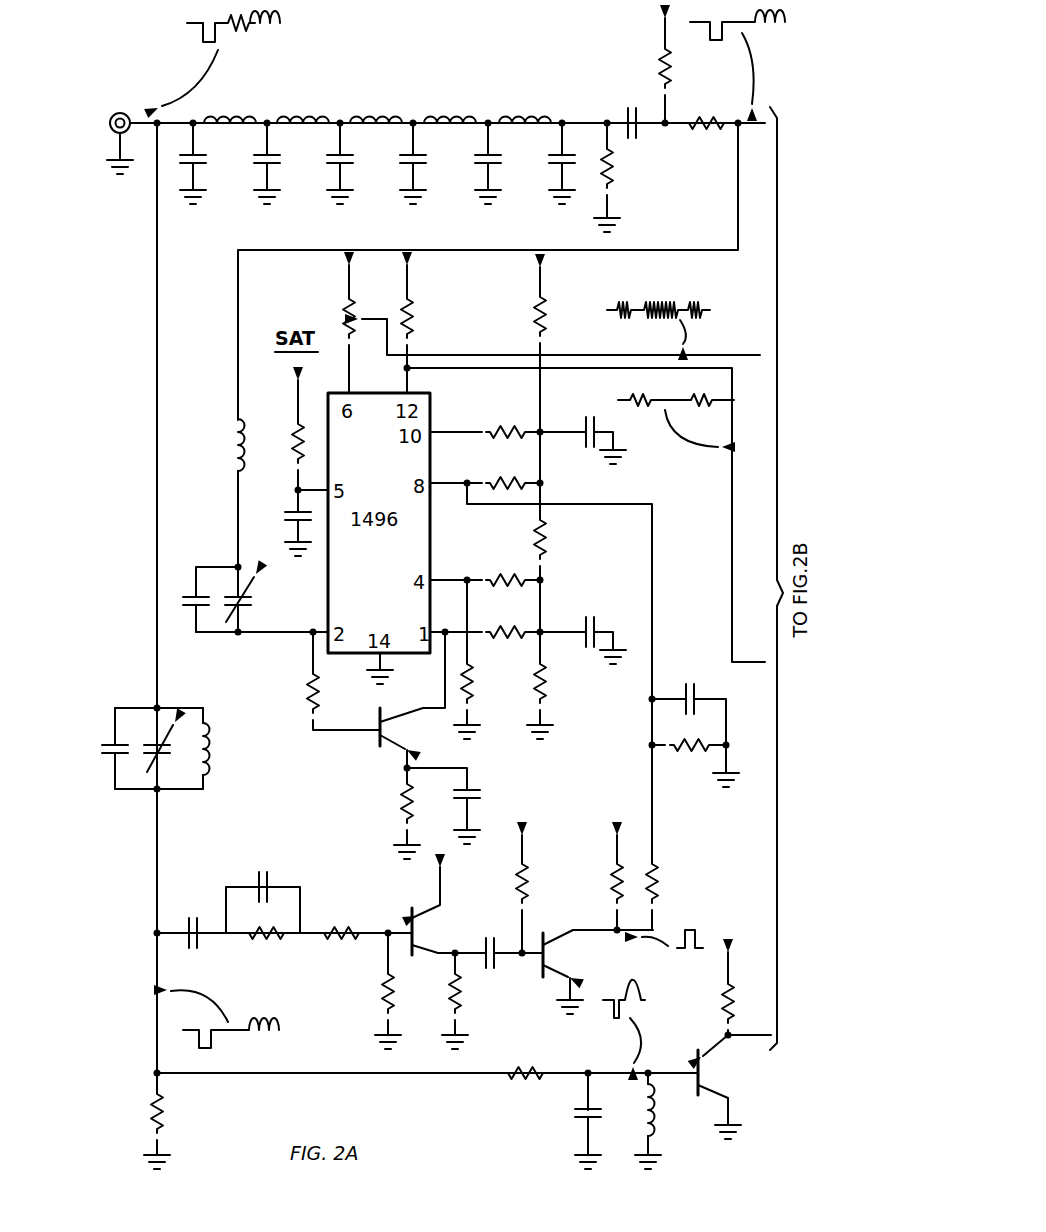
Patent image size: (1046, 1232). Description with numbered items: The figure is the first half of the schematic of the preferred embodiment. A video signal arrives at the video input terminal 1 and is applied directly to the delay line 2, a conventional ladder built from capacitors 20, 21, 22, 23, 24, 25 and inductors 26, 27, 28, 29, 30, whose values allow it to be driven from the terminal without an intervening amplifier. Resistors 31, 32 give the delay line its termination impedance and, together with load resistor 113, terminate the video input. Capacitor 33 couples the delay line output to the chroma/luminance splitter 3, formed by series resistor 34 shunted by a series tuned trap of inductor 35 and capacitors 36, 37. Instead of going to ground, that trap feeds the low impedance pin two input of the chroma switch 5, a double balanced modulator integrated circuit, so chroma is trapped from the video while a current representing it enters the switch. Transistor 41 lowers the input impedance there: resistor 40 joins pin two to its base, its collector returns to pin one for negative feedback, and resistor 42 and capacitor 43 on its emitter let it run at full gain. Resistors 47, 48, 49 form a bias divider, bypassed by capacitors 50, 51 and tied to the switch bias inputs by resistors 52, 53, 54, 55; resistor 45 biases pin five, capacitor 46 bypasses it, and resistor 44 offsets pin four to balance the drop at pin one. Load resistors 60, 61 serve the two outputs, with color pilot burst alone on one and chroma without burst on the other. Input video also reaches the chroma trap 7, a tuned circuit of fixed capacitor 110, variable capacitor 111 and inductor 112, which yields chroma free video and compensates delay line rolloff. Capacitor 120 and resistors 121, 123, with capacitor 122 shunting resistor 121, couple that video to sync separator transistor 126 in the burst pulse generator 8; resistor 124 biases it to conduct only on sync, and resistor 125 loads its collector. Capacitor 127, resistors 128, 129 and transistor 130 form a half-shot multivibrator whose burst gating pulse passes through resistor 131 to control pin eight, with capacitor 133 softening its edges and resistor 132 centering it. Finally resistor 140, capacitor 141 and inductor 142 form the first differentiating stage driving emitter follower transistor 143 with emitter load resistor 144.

The video input terminal 1 is at (131, 137).
The delay line 2 is at (424, 58).
The chroma/luminance splitter 3 is at (206, 407).
The chroma switch 5 is at (284, 677).
The chroma trap 7 is at (196, 692).
The burst pulse generator 8 is at (541, 1021).
The capacitor 20 is at (198, 163).
The capacitor 21 is at (272, 163).
The capacitor 22 is at (345, 163).
The capacitor 23 is at (418, 163).
The capacitor 24 is at (492, 163).
The capacitor 25 is at (560, 168).
The inductor 26 is at (224, 117).
The inductor 27 is at (297, 117).
The inductor 28 is at (370, 117).
The inductor 29 is at (444, 117).
The inductor 30 is at (517, 117).
The resistor 31 is at (610, 168).
The resistor 32 is at (660, 72).
The capacitor 33 is at (626, 115).
The series resistor 34 is at (712, 128).
The inductor 35 is at (236, 448).
The capacitor 36 is at (184, 598).
The capacitor 37 is at (247, 612).
The resistor 40 is at (312, 702).
The transistor 41 is at (380, 740).
The resistor 42 is at (404, 806).
The capacitor 43 is at (472, 796).
The resistor 44 is at (470, 700).
The resistor 45 is at (296, 440).
The capacitor 46 is at (294, 523).
The resistor 47 is at (545, 318).
The resistor 48 is at (543, 556).
The resistor 49 is at (543, 696).
The capacitor 50 is at (585, 436).
The capacitor 51 is at (595, 630).
The resistor 52 is at (512, 428).
The resistor 53 is at (505, 478).
The resistor 54 is at (505, 575).
The resistor 55 is at (510, 640).
The load resistor 60 is at (345, 313).
The load resistor 61 is at (419, 318).
The fixed capacitor 110 is at (113, 762).
The variable capacitor 111 is at (160, 772).
The inductor 112 is at (212, 746).
The load resistor 113 is at (170, 1100).
The capacitor 120 is at (199, 920).
The resistor 121 is at (271, 946).
The capacitor 122 is at (268, 882).
The resistor 123 is at (346, 928).
The resistor 124 is at (385, 1006).
The resistor 125 is at (459, 1006).
The sync separator transistor 126 is at (411, 922).
The capacitor 127 is at (484, 945).
The resistor 128 is at (527, 877).
The resistor 129 is at (610, 880).
The transistor 130 is at (562, 942).
The resistor 131 is at (664, 894).
The resistor 132 is at (700, 760).
The capacitor 133 is at (708, 657).
The resistor 140 is at (498, 1085).
The capacitor 141 is at (582, 1121).
The inductor 142 is at (656, 1118).
The emitter follower transistor 143 is at (716, 1094).
The emitter load resistor 144 is at (723, 1000).